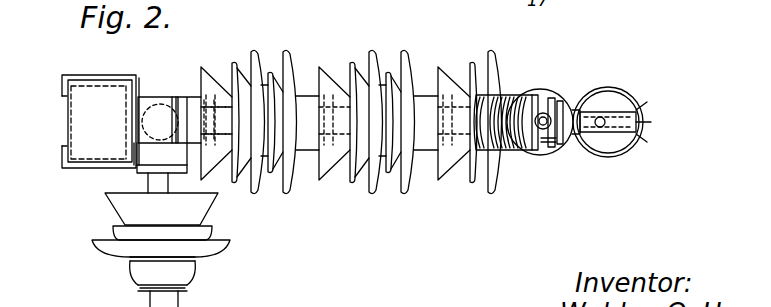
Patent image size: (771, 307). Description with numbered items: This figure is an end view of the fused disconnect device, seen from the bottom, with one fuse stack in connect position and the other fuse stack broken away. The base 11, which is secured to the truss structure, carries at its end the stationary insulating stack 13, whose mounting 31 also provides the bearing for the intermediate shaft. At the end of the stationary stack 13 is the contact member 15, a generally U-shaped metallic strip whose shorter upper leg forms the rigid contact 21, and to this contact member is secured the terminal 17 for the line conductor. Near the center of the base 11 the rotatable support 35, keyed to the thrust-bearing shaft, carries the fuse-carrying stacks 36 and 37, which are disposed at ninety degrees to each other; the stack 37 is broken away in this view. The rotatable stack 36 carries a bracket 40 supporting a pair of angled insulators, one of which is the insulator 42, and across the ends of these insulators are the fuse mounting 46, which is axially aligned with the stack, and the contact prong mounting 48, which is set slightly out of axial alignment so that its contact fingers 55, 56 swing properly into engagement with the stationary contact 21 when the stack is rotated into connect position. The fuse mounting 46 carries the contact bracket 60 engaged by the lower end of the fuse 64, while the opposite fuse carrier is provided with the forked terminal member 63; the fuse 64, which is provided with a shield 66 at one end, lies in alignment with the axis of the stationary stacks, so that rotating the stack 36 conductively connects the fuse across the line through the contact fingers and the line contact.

The base 11 is at (78, 125).
The stationary insulating stack 13 is at (331, 80).
The contact member 15 is at (537, 150).
The terminal 17 is at (546, 104).
The upper leg contact 21 is at (550, 128).
The mounting 31 is at (152, 108).
The support 35 is at (143, 162).
The fuse-carrying stack 36 is at (289, 70).
The fuse-carrying stack 37 is at (187, 268).
The bracket 40 is at (458, 98).
The insulator 42 is at (475, 167).
The fuse mounting 46 is at (577, 108).
The contact prong mounting 48 is at (560, 100).
The contact finger 55 is at (552, 148).
The contact finger 56 is at (560, 140).
The contact bracket 60 is at (600, 130).
The forked terminal member 63 is at (638, 110).
The fuse 64 is at (604, 119).
The shield 66 is at (632, 145).